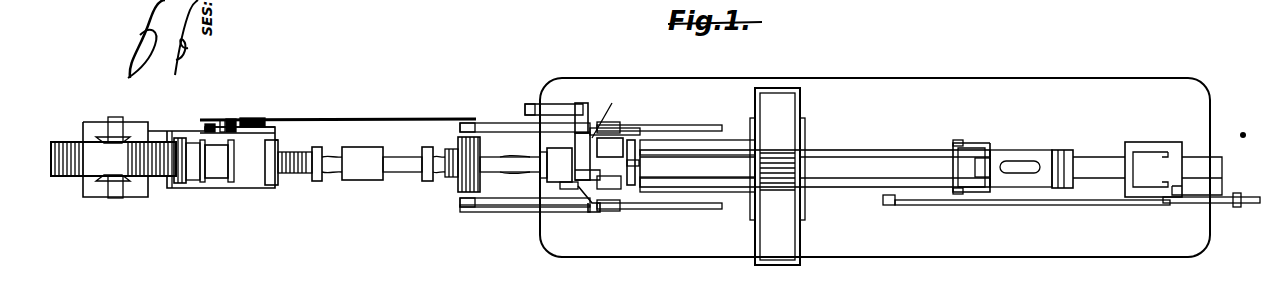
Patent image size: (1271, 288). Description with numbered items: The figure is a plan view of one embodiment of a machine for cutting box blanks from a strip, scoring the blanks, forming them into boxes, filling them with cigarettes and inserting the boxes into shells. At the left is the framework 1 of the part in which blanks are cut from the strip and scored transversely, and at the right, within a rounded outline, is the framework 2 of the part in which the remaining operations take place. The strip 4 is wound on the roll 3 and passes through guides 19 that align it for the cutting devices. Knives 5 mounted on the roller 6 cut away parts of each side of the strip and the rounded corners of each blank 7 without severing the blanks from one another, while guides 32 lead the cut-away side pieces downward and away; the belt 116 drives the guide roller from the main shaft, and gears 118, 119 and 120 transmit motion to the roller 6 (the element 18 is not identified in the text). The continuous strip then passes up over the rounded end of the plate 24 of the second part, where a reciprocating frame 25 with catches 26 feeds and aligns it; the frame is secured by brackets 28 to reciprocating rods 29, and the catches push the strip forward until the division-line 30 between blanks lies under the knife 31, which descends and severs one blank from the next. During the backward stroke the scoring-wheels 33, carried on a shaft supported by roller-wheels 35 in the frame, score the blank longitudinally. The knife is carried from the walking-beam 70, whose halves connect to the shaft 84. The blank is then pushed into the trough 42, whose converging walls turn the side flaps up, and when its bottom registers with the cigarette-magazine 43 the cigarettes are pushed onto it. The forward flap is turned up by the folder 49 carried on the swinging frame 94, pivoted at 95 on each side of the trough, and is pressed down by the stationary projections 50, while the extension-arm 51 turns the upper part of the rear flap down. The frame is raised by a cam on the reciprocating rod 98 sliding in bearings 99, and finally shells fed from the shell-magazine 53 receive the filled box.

The framework 1 is at (146, 128).
The framework 2 is at (875, 167).
The roll 3 is at (62, 142).
The strip 4 is at (408, 174).
The knives 5 is at (202, 142).
The roller 6 is at (216, 161).
The blank 7 is at (360, 180).
The bushing 18 is at (192, 182).
The guides 19 is at (177, 140).
The plate 24 is at (487, 165).
The reciprocating frame 25 is at (566, 148).
The catches 26 is at (558, 187).
The brackets 28 is at (584, 214).
The reciprocating rods 29 is at (502, 123).
The division-line 30 is at (430, 196).
The knife 31 is at (633, 140).
The guides 32 is at (278, 146).
The scoring-wheels 33 is at (610, 147).
The roller-wheels 35 is at (609, 184).
The trough 42 is at (815, 166).
The cigarette-magazine 43 is at (780, 92).
The folder 49 is at (967, 167).
The projections 50 is at (1036, 165).
The extension-arm 51 is at (1008, 160).
The shell-magazine 53 is at (1140, 152).
The walking-beam 70 is at (555, 112).
The shaft 84 is at (592, 128).
The swinging frame 94 is at (978, 148).
The pivot 95 is at (957, 140).
The reciprocating rod 98 is at (1249, 197).
The bearings 99 is at (888, 206).
The belt 116 is at (372, 118).
The gear 118 is at (252, 118).
The gear 119 is at (231, 118).
The gear 120 is at (210, 123).